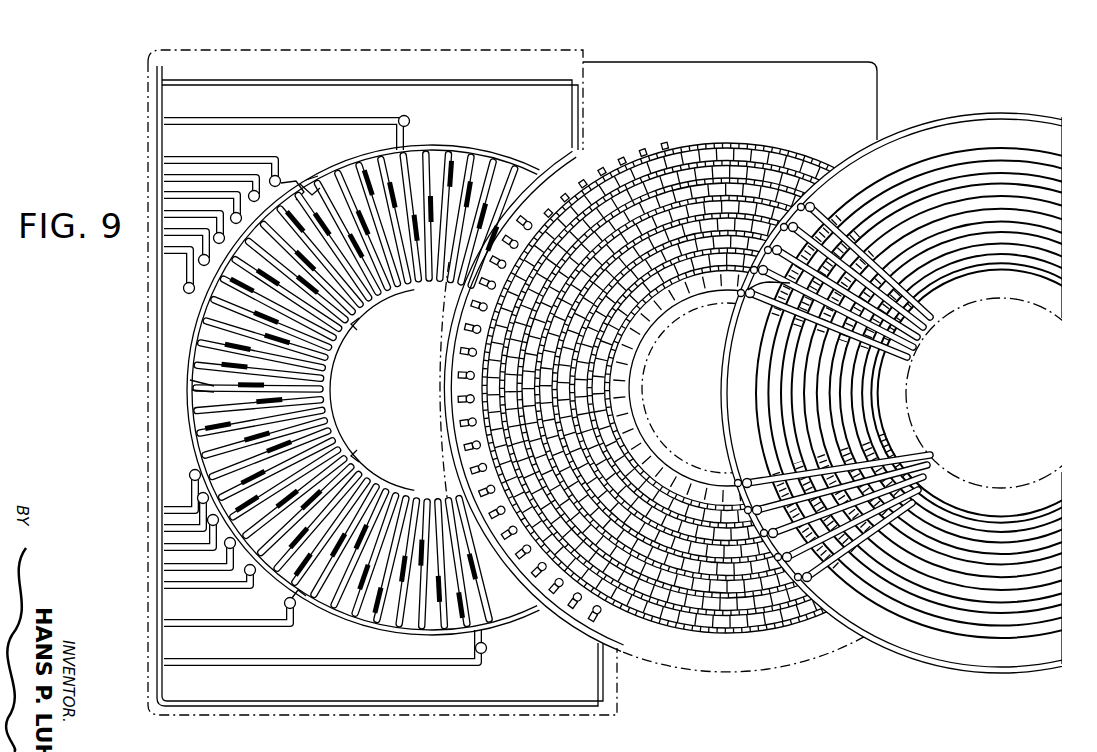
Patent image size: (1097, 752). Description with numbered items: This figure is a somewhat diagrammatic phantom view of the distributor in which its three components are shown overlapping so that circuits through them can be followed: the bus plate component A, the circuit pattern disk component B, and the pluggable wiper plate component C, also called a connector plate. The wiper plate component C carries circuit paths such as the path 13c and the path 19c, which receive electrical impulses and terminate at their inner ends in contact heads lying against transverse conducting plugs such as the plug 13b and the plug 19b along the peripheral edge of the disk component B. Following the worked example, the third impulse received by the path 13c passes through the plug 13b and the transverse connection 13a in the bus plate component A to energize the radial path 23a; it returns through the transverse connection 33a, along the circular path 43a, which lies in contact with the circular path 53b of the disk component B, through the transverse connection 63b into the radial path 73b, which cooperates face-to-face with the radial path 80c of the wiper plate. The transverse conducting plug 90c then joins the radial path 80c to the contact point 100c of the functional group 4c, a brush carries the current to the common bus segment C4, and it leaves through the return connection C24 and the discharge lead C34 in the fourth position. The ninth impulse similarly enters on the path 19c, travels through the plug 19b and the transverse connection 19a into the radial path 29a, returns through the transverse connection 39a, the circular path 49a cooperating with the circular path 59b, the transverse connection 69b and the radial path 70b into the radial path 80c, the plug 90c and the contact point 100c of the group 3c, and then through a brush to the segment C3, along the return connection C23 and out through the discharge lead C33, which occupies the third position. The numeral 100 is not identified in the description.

The bus plate component A is at (973, 122).
The circuit pattern disk component B is at (707, 70).
The pluggable wiper plate component C is at (349, 66).
The discharge lead C33 is at (193, 158).
The return connection C23 is at (279, 176).
The transverse conducting plug 90c is at (322, 182).
The radial conducting path 80c is at (315, 188).
The contact point 100c is at (340, 224).
The circuit path 13c is at (170, 250).
The common bus segment C3 is at (215, 312).
The transverse conducting plug 13b is at (468, 292).
The functional group 3c is at (358, 333).
The contact pad 100 is at (245, 372).
The circular path 53b is at (525, 430).
The functional group 4c is at (358, 440).
The common bus segment C4 is at (198, 440).
The circuit path 19c is at (182, 584).
The return connection C24 is at (283, 604).
The discharge lead C34 is at (205, 626).
The transverse conducting plug 19b is at (545, 588).
The transverse connection 13a is at (748, 290).
The radial path 70b is at (688, 296).
The transverse connection 69b is at (652, 300).
The transverse connection 63b is at (607, 377).
The radial path 73b is at (600, 397).
The circular path 59b is at (652, 470).
The transverse connection 33a is at (775, 306).
The circular circuit path 43a is at (805, 373).
The radial path 23a is at (908, 347).
The transverse connection 39a is at (922, 476).
The radial path 29a is at (928, 490).
The circular circuit path 49a is at (962, 498).
The transverse connection 19a is at (815, 588).